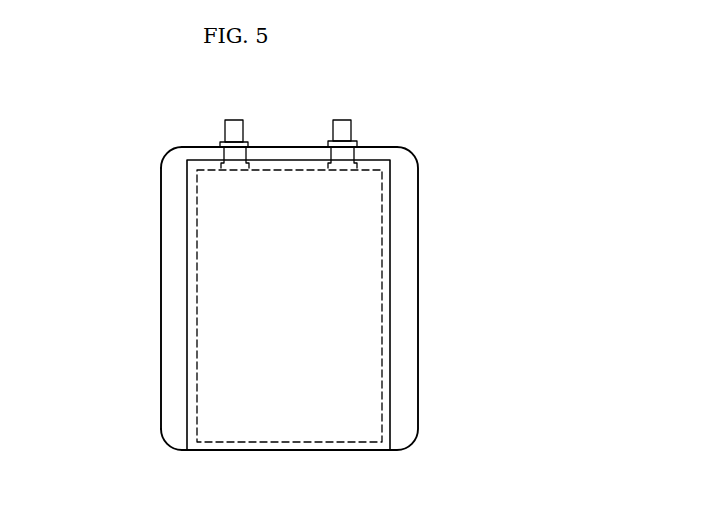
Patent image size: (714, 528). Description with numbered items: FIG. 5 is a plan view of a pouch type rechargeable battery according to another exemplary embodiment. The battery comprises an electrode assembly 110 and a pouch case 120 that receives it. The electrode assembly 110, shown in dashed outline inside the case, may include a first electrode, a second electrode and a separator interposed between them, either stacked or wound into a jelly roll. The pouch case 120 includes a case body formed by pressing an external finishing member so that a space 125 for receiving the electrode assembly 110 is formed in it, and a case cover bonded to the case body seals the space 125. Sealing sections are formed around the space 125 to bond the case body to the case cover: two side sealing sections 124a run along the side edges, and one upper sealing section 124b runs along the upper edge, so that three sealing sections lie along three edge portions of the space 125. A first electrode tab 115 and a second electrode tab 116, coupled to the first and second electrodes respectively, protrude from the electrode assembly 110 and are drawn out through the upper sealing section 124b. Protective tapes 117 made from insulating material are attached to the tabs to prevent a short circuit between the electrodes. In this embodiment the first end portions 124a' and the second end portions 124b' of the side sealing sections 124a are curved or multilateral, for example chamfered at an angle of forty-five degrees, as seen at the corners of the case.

The pouch case 120 is at (143, 226).
The electrode assembly 110 is at (210, 275).
The first electrode tab 115 is at (225, 128).
The second electrode tab 116 is at (348, 128).
The protective tape 117 is at (238, 145).
The side sealing section 124a is at (116, 298).
The first end portion of the side sealing section 124a' is at (120, 462).
The upper sealing section 124b is at (289, 115).
The second end portion of the side sealing section 124b' is at (115, 144).
The space 125 is at (207, 162).